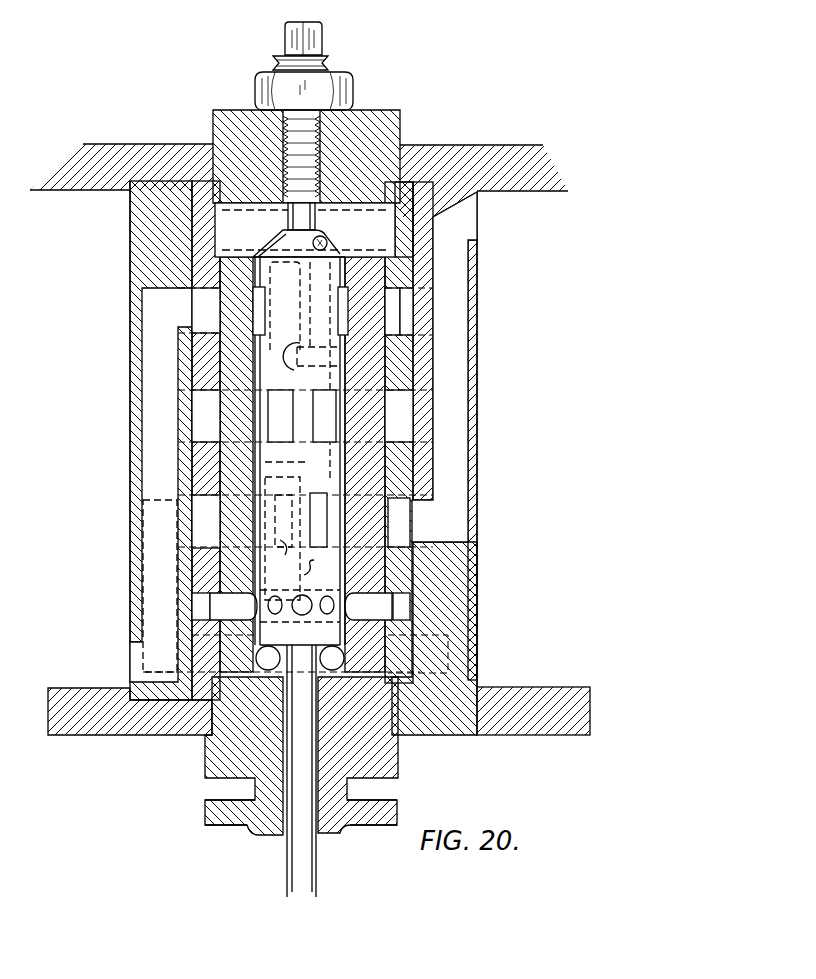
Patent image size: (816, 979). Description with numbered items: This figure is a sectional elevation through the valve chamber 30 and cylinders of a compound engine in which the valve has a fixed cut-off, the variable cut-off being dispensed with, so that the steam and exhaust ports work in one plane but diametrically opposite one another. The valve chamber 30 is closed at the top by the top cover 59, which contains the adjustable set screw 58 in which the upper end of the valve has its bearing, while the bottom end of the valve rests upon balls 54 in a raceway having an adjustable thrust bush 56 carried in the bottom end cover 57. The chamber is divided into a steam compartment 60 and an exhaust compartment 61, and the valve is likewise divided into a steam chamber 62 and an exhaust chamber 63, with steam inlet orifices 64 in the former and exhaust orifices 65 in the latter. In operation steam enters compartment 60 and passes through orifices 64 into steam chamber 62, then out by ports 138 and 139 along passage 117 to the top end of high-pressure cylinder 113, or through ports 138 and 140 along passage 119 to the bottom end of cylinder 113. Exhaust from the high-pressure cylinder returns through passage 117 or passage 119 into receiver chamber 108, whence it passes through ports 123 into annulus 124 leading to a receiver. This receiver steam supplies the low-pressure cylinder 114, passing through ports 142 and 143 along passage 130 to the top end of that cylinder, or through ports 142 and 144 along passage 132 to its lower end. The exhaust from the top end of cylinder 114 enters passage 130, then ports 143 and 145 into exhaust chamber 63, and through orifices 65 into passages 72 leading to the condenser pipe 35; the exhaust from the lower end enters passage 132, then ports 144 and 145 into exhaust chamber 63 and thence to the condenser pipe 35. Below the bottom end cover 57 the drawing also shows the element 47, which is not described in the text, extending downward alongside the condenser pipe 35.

The valve chamber 30 is at (205, 178).
The exhaust pipe 35 is at (298, 771).
The tube 47 is at (316, 840).
The balls 54 is at (280, 655).
The thrust bush 56 is at (262, 812).
The bottom end cover 57 is at (225, 740).
The set screw 58 is at (328, 67).
The top cover 59 is at (355, 135).
The steam compartment 60 is at (305, 230).
The exhaust compartment 61 is at (302, 606).
The steam chamber 62 is at (307, 273).
The exhaust chamber 63 is at (317, 559).
The steam inlet orifices 64 is at (327, 240).
The exhaust orifices 65 is at (300, 606).
The final exhaust ports 72 is at (301, 606).
The receiver chamber 108 is at (311, 364).
The high-pressure cylinder 113 is at (130, 458).
The low-pressure cylinder 114 is at (529, 463).
The passage 117 is at (135, 200).
The passage 119 is at (120, 664).
The ports 123 is at (328, 416).
The annulus 124 is at (304, 416).
The passage 130 is at (444, 367).
The passage 132 is at (489, 651).
The ports 138 is at (338, 326).
The ports 139 is at (395, 321).
The ports 140 is at (208, 310).
The ports 142 is at (313, 492).
The ports 143 is at (402, 522).
The ports 144 is at (208, 521).
The ports 145 is at (285, 531).